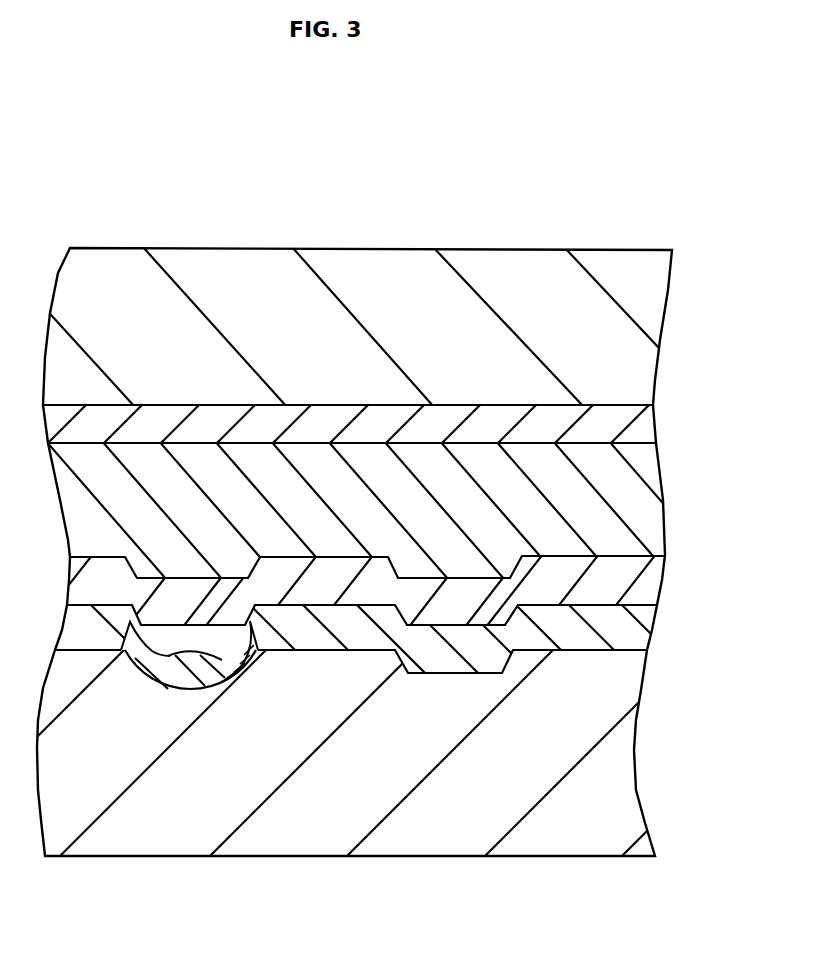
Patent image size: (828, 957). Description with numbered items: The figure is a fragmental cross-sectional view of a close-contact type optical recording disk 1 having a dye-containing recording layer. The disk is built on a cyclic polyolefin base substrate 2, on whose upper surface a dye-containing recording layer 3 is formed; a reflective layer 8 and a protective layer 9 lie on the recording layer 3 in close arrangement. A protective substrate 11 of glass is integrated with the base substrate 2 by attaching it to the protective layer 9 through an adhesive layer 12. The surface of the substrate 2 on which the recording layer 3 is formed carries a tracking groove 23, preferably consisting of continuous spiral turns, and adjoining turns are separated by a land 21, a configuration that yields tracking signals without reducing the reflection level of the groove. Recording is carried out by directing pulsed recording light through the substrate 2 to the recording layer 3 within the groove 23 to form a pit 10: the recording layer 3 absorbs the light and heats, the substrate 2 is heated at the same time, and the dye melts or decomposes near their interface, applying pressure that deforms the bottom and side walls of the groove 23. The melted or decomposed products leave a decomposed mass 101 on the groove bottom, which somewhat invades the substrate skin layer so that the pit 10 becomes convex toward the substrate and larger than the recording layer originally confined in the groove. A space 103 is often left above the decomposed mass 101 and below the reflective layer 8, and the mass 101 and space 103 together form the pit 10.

The optical recording disk 1 is at (679, 233).
The substrate 2 is at (610, 843).
The dye-containing recording layer 3 is at (627, 637).
The reflective layer 8 is at (652, 588).
The protective layer 9 is at (650, 512).
The pit 10 is at (256, 672).
The protective substrate 11 is at (470, 268).
The adhesive layer 12 is at (647, 428).
The land 21 is at (115, 652).
The tracking groove 23 is at (168, 654).
The decomposed mass 101 is at (202, 682).
The space 103 is at (225, 640).